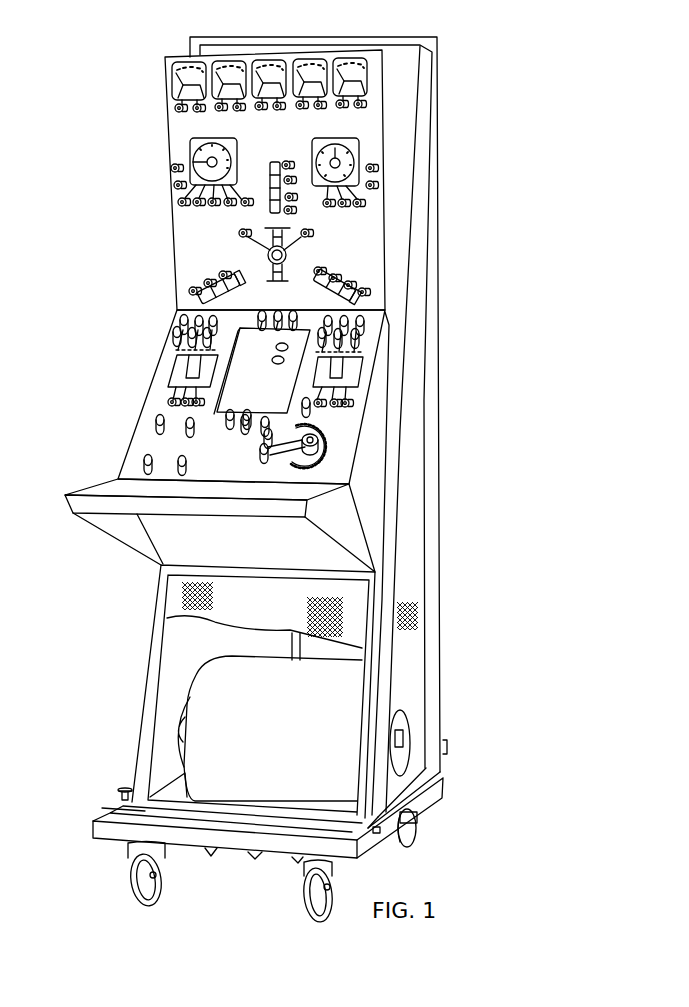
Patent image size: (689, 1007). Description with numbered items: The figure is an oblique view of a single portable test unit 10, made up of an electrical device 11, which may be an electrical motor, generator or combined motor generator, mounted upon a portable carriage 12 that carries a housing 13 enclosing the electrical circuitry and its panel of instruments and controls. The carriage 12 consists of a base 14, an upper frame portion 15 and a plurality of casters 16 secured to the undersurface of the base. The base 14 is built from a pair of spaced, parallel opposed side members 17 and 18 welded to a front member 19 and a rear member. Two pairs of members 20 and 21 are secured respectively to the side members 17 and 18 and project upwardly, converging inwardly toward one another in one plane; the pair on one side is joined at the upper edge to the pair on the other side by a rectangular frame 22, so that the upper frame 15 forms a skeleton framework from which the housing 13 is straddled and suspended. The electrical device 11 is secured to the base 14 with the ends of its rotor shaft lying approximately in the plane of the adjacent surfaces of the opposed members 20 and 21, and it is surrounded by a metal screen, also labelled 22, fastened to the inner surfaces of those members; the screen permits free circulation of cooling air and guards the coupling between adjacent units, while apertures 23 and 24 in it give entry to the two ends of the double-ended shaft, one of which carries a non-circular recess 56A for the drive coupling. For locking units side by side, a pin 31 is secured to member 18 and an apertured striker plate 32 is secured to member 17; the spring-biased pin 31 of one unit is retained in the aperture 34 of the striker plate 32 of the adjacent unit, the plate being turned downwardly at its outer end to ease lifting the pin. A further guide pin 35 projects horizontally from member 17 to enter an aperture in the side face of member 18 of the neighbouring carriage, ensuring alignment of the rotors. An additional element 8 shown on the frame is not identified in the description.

The frame upright 8 is at (363, 153).
The portable test unit 10 is at (133, 376).
The electrical device 11 is at (262, 673).
The portable carriage 12 is at (132, 755).
The housing 13 is at (193, 229).
The base 14 is at (90, 827).
The upper frame portion 15 is at (428, 407).
The casters 16 is at (327, 873).
The side member 17 is at (414, 793).
The side member 18 is at (108, 808).
The front member 19 is at (273, 852).
The upper frame member 20 is at (437, 364).
The upper frame member 21 is at (397, 392).
The rectangular frame 22 is at (395, 38).
The aperture 23 is at (404, 716).
The aperture 24 is at (187, 706).
The pin 31 is at (122, 790).
The striker plate 32 is at (416, 835).
The aperture 34 is at (418, 814).
The pin 35 is at (380, 834).
The recess 56A is at (403, 737).